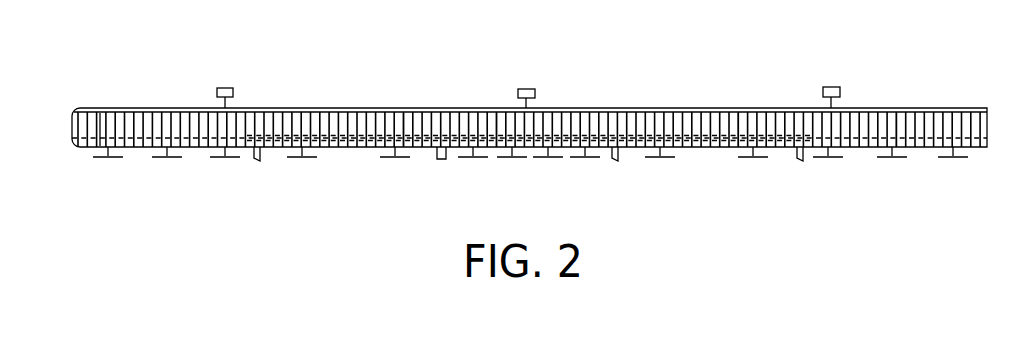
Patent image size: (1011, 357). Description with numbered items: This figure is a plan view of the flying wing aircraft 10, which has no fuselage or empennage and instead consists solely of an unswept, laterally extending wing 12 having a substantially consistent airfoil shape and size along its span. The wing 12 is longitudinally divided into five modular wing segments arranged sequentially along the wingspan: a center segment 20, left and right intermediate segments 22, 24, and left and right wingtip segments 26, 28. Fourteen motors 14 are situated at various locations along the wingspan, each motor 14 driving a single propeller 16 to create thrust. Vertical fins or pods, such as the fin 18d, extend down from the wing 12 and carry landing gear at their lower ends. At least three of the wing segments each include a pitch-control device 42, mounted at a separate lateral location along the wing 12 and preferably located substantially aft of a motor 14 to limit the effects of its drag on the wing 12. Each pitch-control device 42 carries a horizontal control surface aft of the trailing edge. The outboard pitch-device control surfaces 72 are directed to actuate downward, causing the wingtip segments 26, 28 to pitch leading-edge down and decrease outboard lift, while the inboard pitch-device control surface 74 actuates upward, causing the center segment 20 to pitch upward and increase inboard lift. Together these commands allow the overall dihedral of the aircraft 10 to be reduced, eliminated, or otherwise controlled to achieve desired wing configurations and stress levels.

The flying wing aircraft 10 is at (794, 68).
The wing 12 is at (637, 128).
The motor 14 is at (395, 157).
The propeller 16 is at (225, 157).
The vertical fin 18d is at (258, 161).
The center segment 20 is at (495, 138).
The left intermediate segment 22 is at (737, 125).
The right intermediate segment 24 is at (405, 128).
The left wingtip segment 26 is at (900, 130).
The right wingtip segment 28 is at (121, 140).
The pitch-control device 42 is at (840, 92).
The outboard pitch-device control surface 72 is at (233, 92).
The inboard pitch-device control surface 74 is at (535, 93).